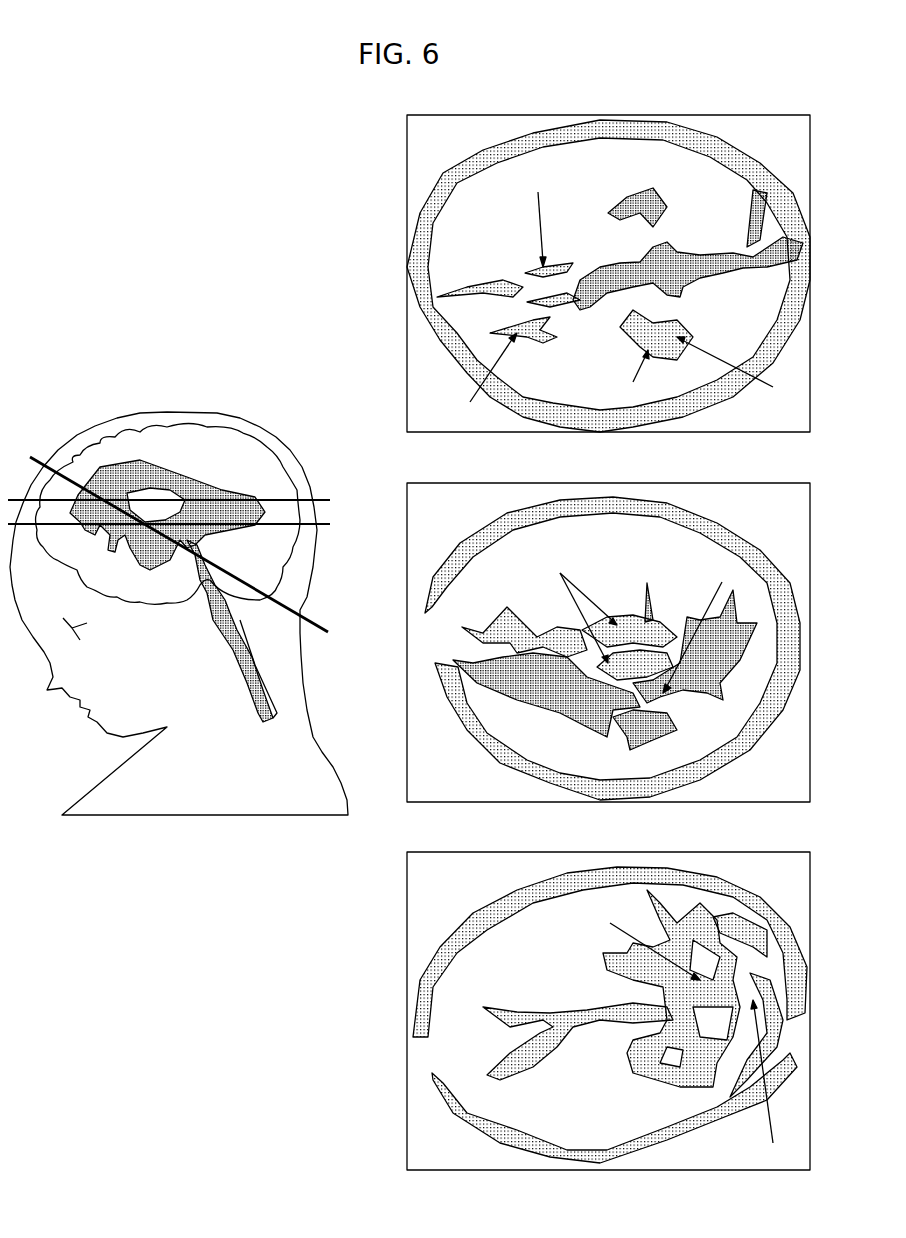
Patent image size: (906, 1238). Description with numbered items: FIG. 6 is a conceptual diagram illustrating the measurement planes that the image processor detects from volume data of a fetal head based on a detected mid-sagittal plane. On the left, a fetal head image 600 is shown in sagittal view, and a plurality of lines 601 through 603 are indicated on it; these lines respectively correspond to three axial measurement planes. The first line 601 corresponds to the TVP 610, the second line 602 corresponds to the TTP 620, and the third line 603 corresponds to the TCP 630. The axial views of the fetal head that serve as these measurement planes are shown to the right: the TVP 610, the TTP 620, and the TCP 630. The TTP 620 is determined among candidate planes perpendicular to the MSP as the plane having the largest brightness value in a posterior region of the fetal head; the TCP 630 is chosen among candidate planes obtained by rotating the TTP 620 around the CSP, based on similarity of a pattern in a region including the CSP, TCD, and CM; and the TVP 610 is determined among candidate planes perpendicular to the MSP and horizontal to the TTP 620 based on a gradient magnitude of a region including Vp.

The head of fetus (sagittal view) 600 is at (168, 412).
The line corresponding to the TVP 601 is at (190, 501).
The line corresponding to the TTP 602 is at (190, 525).
The line corresponding to the TCP 603 is at (201, 548).
The TVP 610 is at (753, 115).
The TTP 620 is at (753, 483).
The TCP 630 is at (753, 852).